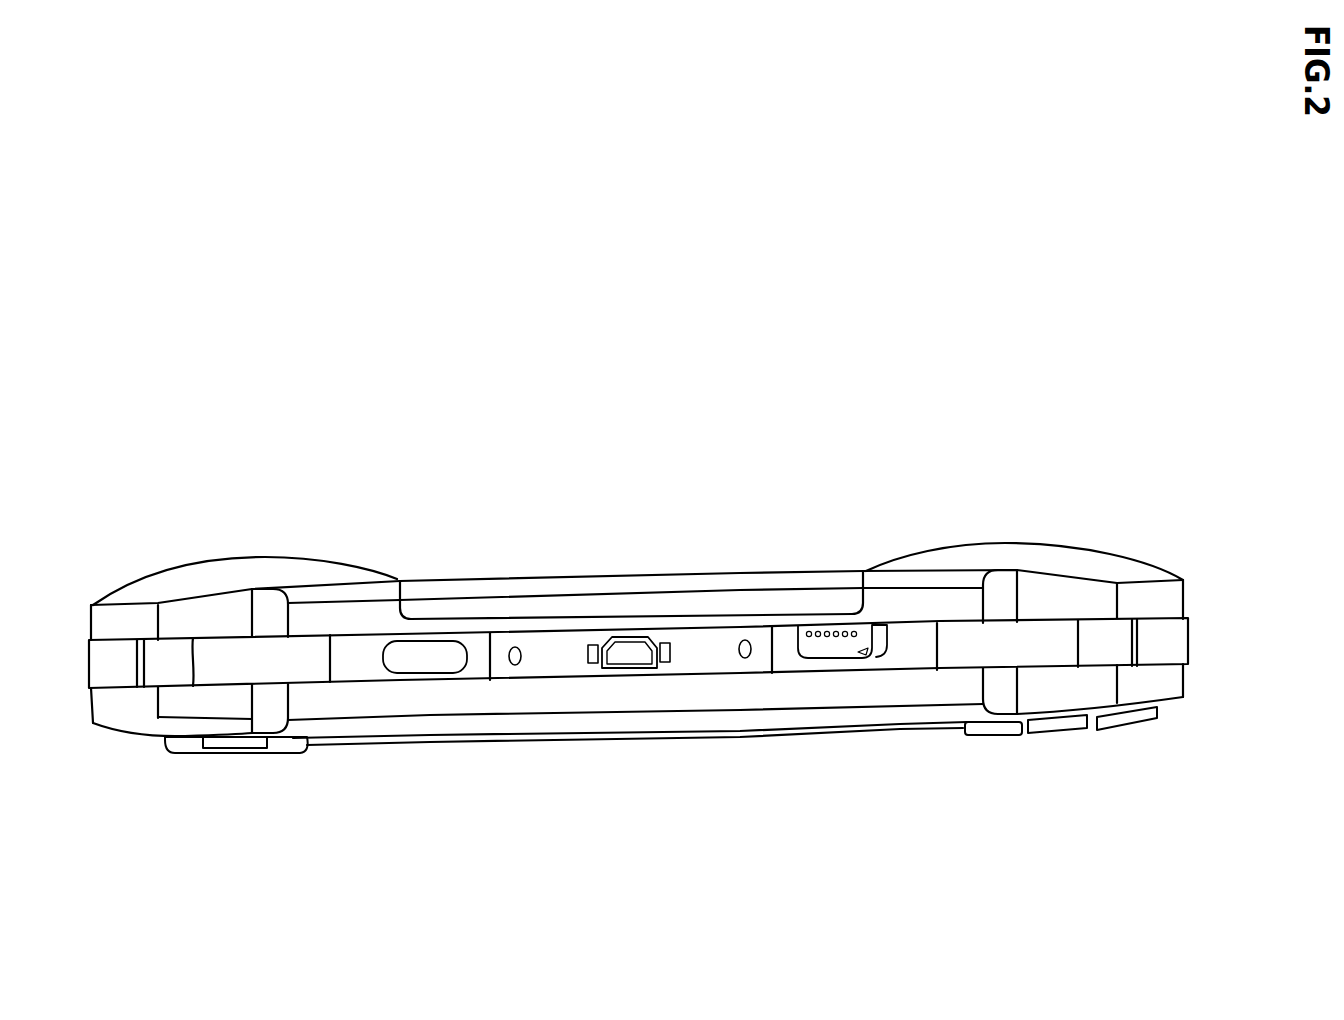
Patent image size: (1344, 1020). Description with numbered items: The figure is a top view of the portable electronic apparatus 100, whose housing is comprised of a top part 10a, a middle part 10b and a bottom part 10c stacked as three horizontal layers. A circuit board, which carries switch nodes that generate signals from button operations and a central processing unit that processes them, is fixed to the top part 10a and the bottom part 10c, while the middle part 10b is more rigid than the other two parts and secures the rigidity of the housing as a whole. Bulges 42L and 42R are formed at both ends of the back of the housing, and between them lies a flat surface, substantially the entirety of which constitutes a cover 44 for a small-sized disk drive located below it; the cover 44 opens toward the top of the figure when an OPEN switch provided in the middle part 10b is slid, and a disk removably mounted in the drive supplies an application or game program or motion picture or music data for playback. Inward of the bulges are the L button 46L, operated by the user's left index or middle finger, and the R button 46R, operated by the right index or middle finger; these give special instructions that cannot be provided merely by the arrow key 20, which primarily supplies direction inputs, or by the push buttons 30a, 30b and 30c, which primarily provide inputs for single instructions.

The portable electronic apparatus 100 is at (1068, 333).
The top part 10a is at (1178, 683).
The middle part 10b is at (1178, 642).
The bottom part 10c is at (1178, 602).
The arrow key 20 is at (183, 750).
The push button 30a is at (1128, 730).
The push button 30b is at (1063, 733).
The push button 30c is at (990, 737).
The bulge 42L is at (268, 558).
The bulge 42R is at (1022, 545).
The cover 44 is at (748, 572).
The L button 46L is at (321, 667).
The R button 46R is at (975, 650).